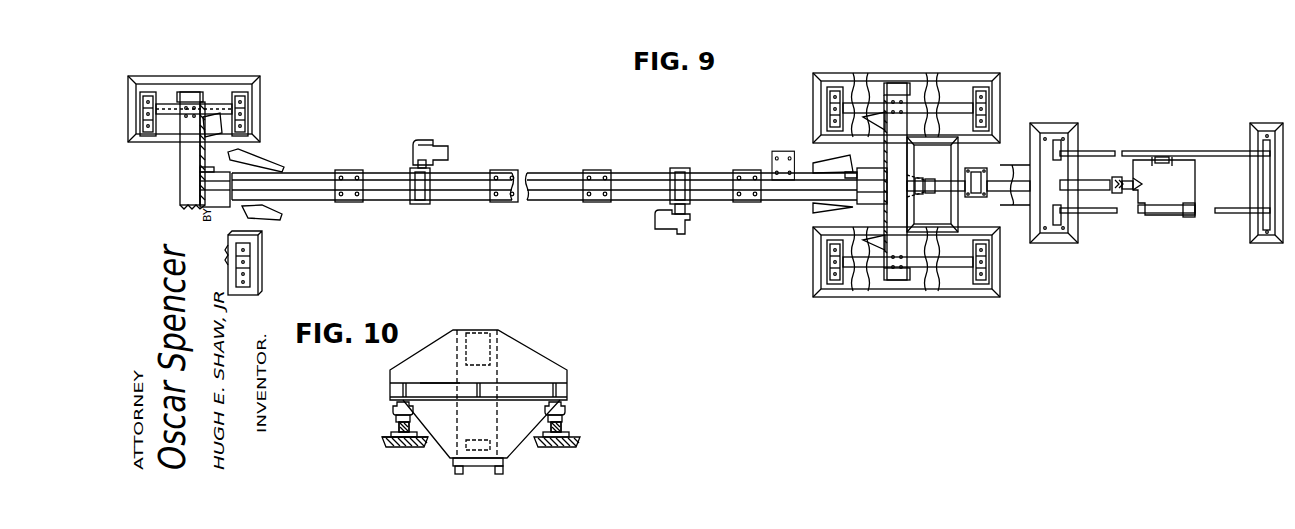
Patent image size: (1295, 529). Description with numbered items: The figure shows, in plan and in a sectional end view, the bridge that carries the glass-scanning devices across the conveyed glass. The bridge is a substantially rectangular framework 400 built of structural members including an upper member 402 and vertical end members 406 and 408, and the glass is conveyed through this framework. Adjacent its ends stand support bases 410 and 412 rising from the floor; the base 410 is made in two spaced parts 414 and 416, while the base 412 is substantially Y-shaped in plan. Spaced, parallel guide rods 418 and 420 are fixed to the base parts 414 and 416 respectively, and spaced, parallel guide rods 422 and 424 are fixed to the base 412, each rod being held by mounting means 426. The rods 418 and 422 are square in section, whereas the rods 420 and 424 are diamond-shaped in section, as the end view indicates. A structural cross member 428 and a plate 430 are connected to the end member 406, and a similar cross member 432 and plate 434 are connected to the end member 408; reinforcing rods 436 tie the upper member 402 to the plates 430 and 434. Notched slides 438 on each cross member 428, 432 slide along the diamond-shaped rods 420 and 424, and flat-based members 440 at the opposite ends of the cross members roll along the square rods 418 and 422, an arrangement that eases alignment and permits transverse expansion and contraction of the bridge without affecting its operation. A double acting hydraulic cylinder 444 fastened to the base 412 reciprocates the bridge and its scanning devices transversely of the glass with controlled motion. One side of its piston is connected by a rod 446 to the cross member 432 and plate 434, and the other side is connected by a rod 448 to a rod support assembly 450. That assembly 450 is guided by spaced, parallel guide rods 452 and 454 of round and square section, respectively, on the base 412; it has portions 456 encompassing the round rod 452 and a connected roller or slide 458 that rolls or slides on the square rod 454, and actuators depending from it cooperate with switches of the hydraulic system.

In FIG. 9, the framework 400 is at (534, 171).
In FIG. 9, the upper member 402 is at (533, 197).
In FIG. 9, the vertical end member 406 is at (215, 172).
In FIG. 9, the vertical end member 408 is at (864, 170).
In FIG. 9, the support base 410 is at (222, 76).
In FIG. 9, the support base 412 is at (938, 73).
In FIG. 9, the base part 414 is at (236, 107).
In FIG. 10, the base part 414 is at (386, 441).
In FIG. 9, the base part 416 is at (258, 290).
In FIG. 9, the guide rod 418 is at (160, 110).
In FIG. 10, the guide rod 418 is at (398, 426).
In FIG. 9, the guide rod 420 is at (248, 270).
In FIG. 10, the guide rod 420 is at (565, 425).
In FIG. 9, the guide rod 422 is at (870, 73).
In FIG. 9, the guide rod 424 is at (955, 267).
In FIG. 9, the mounting means 426 is at (148, 94).
In FIG. 9, the structural cross member 428 is at (180, 183).
In FIG. 10, the structural cross member 428 is at (440, 387).
In FIG. 9, the plate 430 is at (186, 198).
In FIG. 10, the plate 430 is at (440, 339).
In FIG. 9, the structural cross member 432 is at (898, 243).
In FIG. 9, the plate 434 is at (888, 150).
In FIG. 9, the reinforcing rod 436 is at (255, 153).
In FIG. 10, the notched slide 438 is at (562, 418).
In FIG. 10, the flat-based member 440 is at (395, 415).
In FIG. 9, the double acting hydraulic cylinder 444 is at (997, 181).
In FIG. 9, the rod 446 is at (918, 187).
In FIG. 9, the rod 448 is at (1119, 182).
In FIG. 9, the rod support assembly 450 is at (1190, 187).
In FIG. 9, the guide rod 452 is at (1128, 211).
In FIG. 9, the guide rod 454 is at (1223, 152).
In FIG. 9, the portion 456 is at (1188, 213).
In FIG. 9, the roller or slide 458 is at (1162, 157).